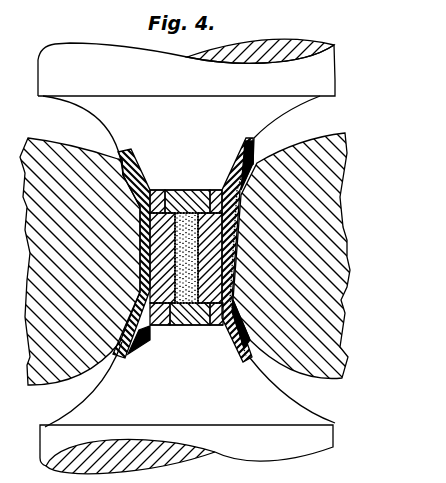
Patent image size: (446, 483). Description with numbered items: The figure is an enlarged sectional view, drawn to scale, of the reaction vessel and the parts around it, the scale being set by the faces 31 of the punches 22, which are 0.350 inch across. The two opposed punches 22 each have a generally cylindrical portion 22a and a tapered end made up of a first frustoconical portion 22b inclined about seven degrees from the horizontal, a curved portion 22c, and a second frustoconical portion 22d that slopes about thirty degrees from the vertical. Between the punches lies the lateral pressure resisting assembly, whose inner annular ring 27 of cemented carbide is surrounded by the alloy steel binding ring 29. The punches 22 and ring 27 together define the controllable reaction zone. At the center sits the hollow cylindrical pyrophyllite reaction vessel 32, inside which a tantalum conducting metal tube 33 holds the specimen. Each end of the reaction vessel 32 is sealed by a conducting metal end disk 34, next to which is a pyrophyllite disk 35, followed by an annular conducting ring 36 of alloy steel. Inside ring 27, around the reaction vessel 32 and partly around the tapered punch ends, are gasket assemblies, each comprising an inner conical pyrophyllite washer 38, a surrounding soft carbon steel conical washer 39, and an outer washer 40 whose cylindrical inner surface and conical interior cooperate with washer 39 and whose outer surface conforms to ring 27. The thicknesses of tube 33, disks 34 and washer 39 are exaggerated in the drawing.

The punch 22 is at (254, 121).
The generally cylindrical portion 22a is at (336, 62).
The first frustoconical portion 22b is at (318, 98).
The curved portion 22c is at (274, 118).
The second frustoconical portion 22d is at (107, 132).
The inner annular ring 27 is at (62, 384).
The binding ring 29 is at (330, 382).
The face 31 is at (191, 182).
The reaction vessel 32 is at (236, 232).
The conducting metal tube 33 is at (141, 252).
The conducting metal end disk 34 is at (169, 189).
The pyrophyllite disk 35 is at (202, 189).
The annular conducting ring 36 is at (151, 189).
The inner conical pyrophyllite washer 38 is at (240, 175).
The soft carbon steel conical washer 39 is at (246, 181).
The washer 40 is at (137, 210).